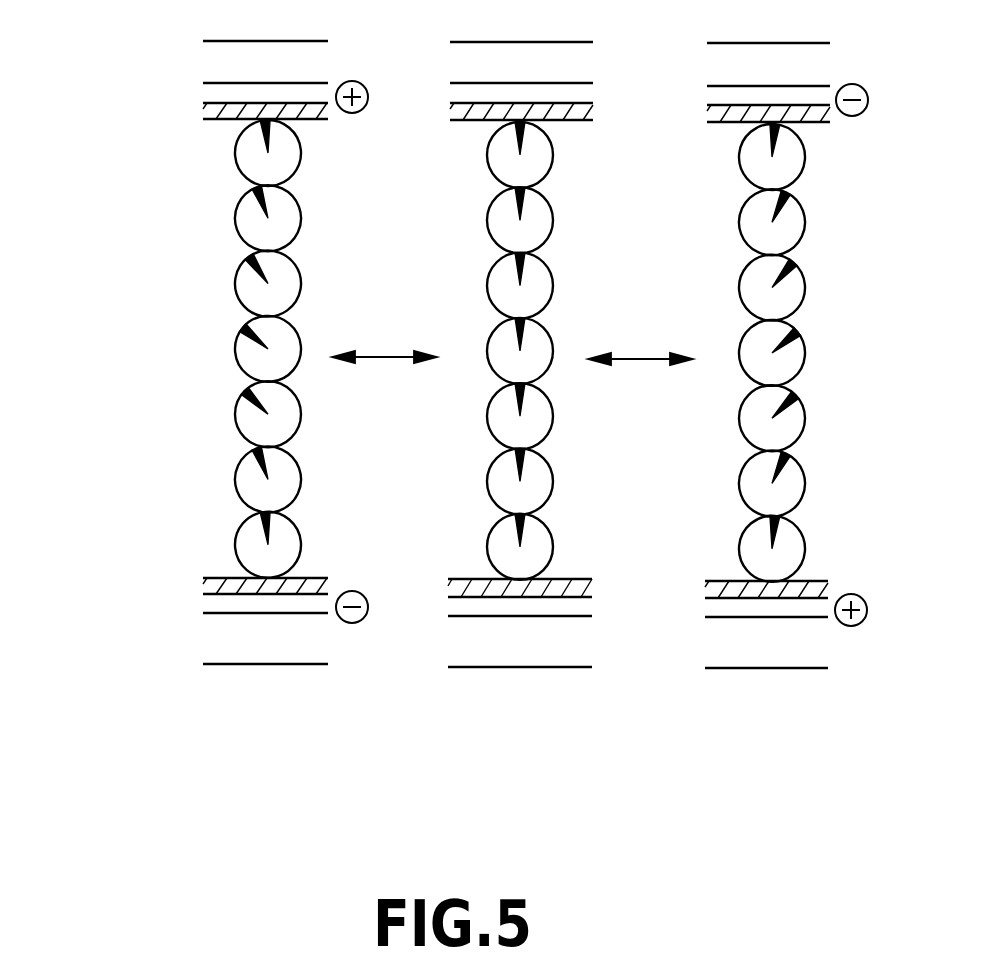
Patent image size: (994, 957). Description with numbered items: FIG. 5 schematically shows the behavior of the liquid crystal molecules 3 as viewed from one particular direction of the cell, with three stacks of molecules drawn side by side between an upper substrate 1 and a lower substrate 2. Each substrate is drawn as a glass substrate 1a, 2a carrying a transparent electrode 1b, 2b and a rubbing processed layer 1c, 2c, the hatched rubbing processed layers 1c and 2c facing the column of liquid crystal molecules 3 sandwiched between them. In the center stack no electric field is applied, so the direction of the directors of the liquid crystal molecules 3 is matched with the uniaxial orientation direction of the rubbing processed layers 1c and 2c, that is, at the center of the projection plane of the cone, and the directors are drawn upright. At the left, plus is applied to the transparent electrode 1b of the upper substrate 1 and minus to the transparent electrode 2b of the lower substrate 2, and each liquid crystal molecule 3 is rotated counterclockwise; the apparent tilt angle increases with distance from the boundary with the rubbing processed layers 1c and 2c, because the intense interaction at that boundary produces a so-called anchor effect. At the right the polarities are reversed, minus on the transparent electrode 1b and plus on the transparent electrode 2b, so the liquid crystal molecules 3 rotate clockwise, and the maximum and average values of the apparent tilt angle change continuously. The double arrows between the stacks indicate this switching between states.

The upper substrate 1 is at (88, 36).
The glass substrate 1a is at (220, 59).
The transparent electrode 1b is at (220, 97).
The rubbing processed layer 1c is at (203, 110).
The lower substrate 2 is at (80, 560).
The glass substrate 2a is at (202, 643).
The transparent electrode 2b is at (217, 628).
The rubbing processed layer 2c is at (203, 584).
The liquid crystal molecule 3 is at (262, 145).